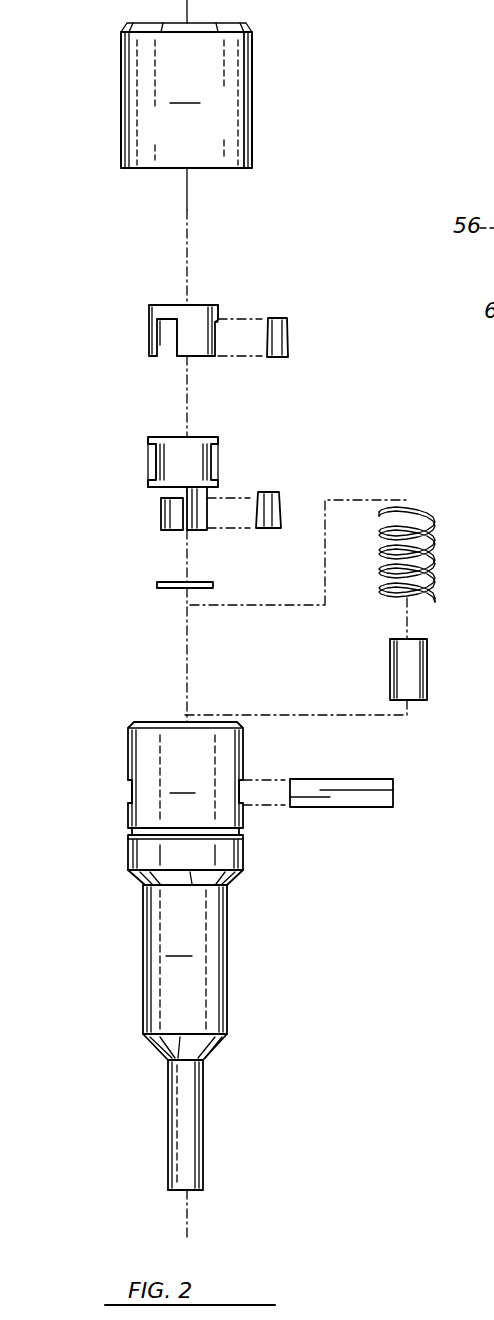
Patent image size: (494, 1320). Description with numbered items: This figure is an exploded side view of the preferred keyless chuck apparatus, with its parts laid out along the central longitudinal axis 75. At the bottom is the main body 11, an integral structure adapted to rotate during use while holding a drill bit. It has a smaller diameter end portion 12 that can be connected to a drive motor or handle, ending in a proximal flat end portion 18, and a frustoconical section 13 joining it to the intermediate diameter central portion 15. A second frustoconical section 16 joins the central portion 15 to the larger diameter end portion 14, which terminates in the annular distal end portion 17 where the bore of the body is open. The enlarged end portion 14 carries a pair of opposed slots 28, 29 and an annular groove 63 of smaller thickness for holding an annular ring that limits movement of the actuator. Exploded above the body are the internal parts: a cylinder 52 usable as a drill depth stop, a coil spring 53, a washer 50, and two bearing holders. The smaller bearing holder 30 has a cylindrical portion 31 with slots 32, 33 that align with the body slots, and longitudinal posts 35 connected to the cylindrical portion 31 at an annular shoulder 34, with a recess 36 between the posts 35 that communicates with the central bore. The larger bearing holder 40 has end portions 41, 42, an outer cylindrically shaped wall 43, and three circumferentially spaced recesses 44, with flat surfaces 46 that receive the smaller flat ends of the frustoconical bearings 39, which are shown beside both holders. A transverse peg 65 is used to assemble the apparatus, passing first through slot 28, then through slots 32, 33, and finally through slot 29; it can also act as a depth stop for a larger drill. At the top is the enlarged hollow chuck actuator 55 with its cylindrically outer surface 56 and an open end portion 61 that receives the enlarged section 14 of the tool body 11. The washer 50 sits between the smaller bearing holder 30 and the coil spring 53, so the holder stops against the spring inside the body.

The main body 11 is at (194, 938).
The smaller diameter end portion 12 is at (185, 1116).
The frustoconical section 13 is at (180, 1046).
The larger diameter end portion 14 is at (205, 750).
The intermediate diameter central portion 15 is at (226, 966).
The frustoconical section 16 is at (140, 878).
The annular distal end portion 17 is at (152, 723).
The proximal flat end portion 18 is at (200, 1191).
The slot 28 is at (250, 788).
The slot 29 is at (122, 791).
The smaller bearing holder 30 is at (215, 438).
The cylindrical portion 31 is at (182, 445).
The slot 32 is at (150, 462).
The slot 33 is at (215, 462).
The annular shoulder 34 is at (160, 492).
The longitudinal posts 35 is at (160, 525).
The recess 36 is at (182, 536).
The frustoconical bearing 39 is at (290, 347).
The larger bearing holder 40 is at (150, 330).
The end portion 41 is at (208, 307).
The end portion 42 is at (208, 360).
The outer cylindrically shaped wall 43 is at (190, 318).
The recess 44 is at (170, 348).
The flat surface 46 is at (222, 322).
The washer 50 is at (172, 590).
The cylinder 52 is at (412, 682).
The coil spring 53 is at (415, 510).
The chuck actuator 55 is at (231, 118).
The cylindrically outer surface 56 is at (228, 90).
The open end portion 61 is at (225, 172).
The annular groove 63 is at (130, 836).
The transverse peg 65 is at (375, 778).
The central longitudinal axis 75 is at (181, 207).